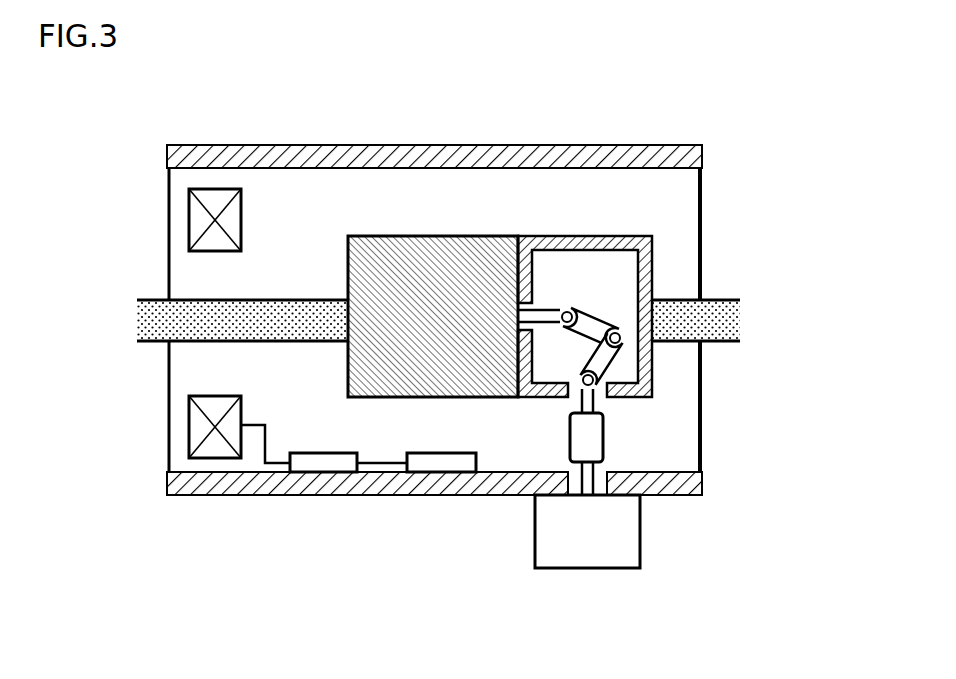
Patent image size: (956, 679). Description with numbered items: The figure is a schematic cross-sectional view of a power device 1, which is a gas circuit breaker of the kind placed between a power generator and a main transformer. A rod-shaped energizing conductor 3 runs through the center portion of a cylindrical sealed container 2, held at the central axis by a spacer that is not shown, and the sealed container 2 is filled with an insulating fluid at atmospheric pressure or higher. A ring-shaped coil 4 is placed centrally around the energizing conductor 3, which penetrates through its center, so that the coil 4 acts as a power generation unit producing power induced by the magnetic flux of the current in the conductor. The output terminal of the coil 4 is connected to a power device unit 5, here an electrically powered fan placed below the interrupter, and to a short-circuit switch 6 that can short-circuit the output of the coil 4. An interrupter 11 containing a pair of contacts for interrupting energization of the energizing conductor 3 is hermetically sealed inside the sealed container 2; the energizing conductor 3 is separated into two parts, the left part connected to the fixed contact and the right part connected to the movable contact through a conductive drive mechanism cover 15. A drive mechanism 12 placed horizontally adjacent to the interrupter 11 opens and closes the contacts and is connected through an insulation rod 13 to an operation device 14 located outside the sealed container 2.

The power device 1 is at (292, 124).
The sealed container 2 is at (373, 145).
The energizing conductor 3 is at (247, 312).
The ring-shaped coil 4 is at (218, 458).
The power device unit 5 is at (440, 465).
The short-circuit switch 6 is at (330, 465).
The interrupter 11 is at (450, 236).
The drive mechanism 12 is at (594, 314).
The insulation rod 13 is at (593, 435).
The operation device 14 is at (570, 558).
The drive mechanism cover 15 is at (578, 236).